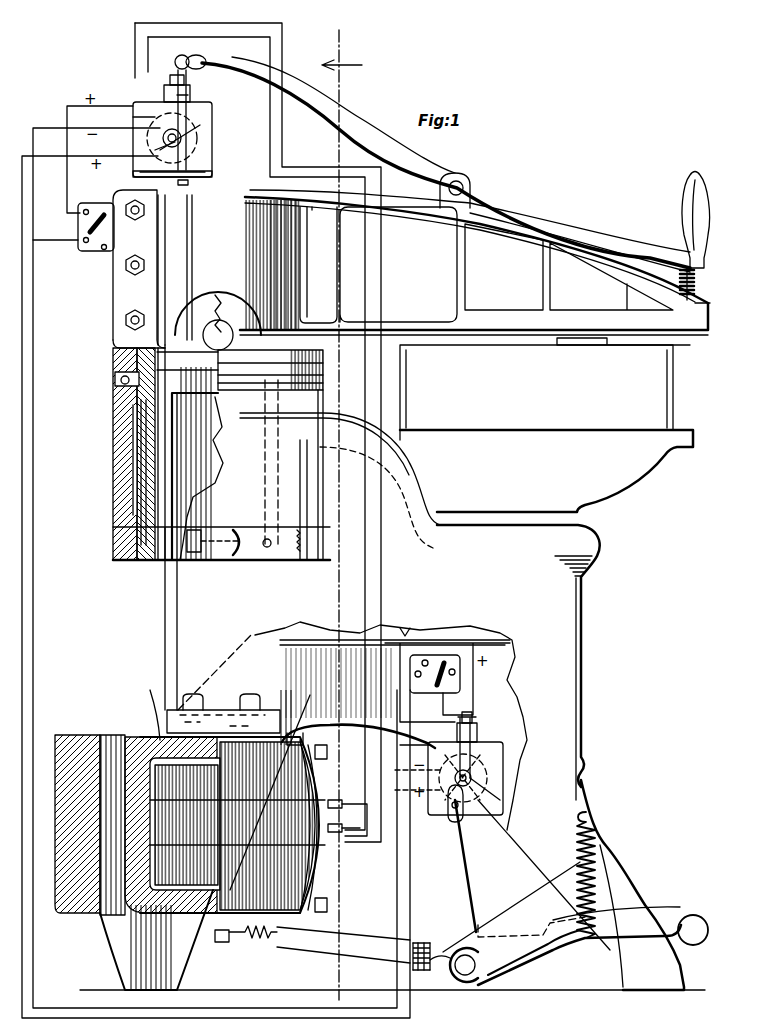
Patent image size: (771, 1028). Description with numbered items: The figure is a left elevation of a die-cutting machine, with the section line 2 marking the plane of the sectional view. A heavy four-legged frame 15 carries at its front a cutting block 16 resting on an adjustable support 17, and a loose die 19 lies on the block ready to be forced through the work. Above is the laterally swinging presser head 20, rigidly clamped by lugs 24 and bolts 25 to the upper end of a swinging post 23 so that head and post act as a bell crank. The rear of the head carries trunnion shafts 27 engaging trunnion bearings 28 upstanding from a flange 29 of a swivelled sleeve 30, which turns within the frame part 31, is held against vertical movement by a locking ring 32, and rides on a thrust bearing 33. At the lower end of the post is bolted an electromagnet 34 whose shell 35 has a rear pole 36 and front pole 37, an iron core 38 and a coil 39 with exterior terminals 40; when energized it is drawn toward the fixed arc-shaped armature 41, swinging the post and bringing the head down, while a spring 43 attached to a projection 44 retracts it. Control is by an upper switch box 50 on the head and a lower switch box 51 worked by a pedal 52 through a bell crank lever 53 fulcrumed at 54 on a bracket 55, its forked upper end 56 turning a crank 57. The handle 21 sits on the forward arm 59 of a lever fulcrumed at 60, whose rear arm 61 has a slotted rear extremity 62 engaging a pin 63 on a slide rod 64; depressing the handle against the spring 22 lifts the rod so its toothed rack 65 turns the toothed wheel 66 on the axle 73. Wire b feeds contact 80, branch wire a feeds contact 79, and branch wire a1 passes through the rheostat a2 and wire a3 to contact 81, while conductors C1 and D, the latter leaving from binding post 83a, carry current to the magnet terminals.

The section line 2 is at (342, 512).
The outgoing conductor D is at (282, 30).
The branch wire a is at (206, 580).
The wire b is at (209, 556).
The branch wire a1 is at (73, 227).
The rheostat a2 is at (277, 490).
The wire a3 is at (67, 106).
The frame 15 is at (582, 708).
The cutting block 16 is at (536, 387).
The support 17 is at (546, 471).
The loose die 19 is at (670, 343).
The presser head 20 is at (475, 266).
The handle 21 is at (687, 180).
The spring 22 is at (700, 278).
The post 23 is at (163, 610).
The lugs 24 is at (118, 305).
The bolts 25 is at (120, 328).
The trunnion shafts 27 is at (218, 335).
The trunnion bearings 28 is at (232, 290).
The flange 29 is at (112, 362).
The sleeve 30 is at (135, 438).
The frame part 31 is at (113, 478).
The locking ring 32 is at (112, 548).
The thrust bearing 33 is at (114, 392).
The electromagnet 34 is at (118, 738).
The shell 35 is at (185, 905).
The rear pole 36 is at (141, 940).
The front pole 37 is at (335, 850).
The iron core 38 is at (290, 737).
The coil 39 is at (204, 686).
The terminals 40 is at (347, 818).
The armature 41 is at (80, 733).
The spring 43 is at (413, 968).
The projection 44 is at (240, 942).
The switch box 50 is at (213, 118).
The second switch box 51 is at (503, 750).
The pedal 52 is at (700, 917).
The bell crank lever 53 is at (462, 885).
The fulcrum 54 is at (478, 963).
The bracket 55 is at (561, 876).
The forked upper end 56 is at (462, 822).
The crank 57 is at (500, 797).
The forward arm 59 is at (602, 228).
The fulcrum 60 is at (462, 186).
The rear arm 61 is at (352, 125).
The slotted rear extremity 62 is at (202, 53).
The pin 63 is at (177, 53).
The slide rod 64 is at (205, 172).
The toothed rack 65 is at (183, 145).
The toothed wheel 66 is at (158, 150).
The axle 73 is at (181, 136).
The contact 79 is at (430, 822).
The fixed contact 80 is at (265, 432).
The contact 81 is at (188, 120).
The binding post 83a is at (163, 90).
The outgoing conductor C1 is at (242, 50).